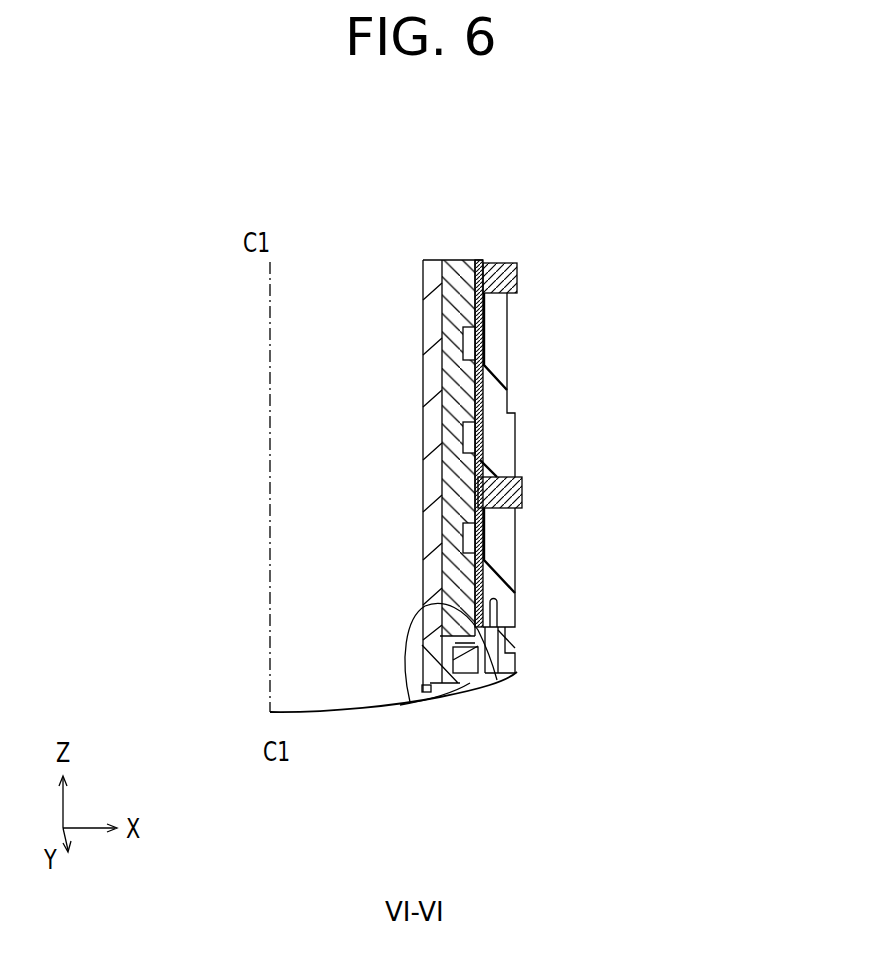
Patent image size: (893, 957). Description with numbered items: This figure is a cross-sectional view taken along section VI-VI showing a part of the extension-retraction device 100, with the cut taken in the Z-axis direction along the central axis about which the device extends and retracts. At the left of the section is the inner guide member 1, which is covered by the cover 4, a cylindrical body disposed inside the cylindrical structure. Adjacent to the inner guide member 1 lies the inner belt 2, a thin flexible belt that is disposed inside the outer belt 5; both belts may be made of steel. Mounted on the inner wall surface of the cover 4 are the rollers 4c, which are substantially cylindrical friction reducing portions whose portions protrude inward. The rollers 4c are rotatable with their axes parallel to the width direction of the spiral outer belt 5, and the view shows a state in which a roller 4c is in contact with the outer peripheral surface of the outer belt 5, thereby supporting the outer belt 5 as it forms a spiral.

The extension-retraction device 100 is at (773, 152).
The inner guide member 1 is at (410, 705).
The inner belt 2 is at (483, 315).
The cover 4 is at (507, 597).
The roller 4c is at (517, 277).
The outer belt 5 is at (486, 355).